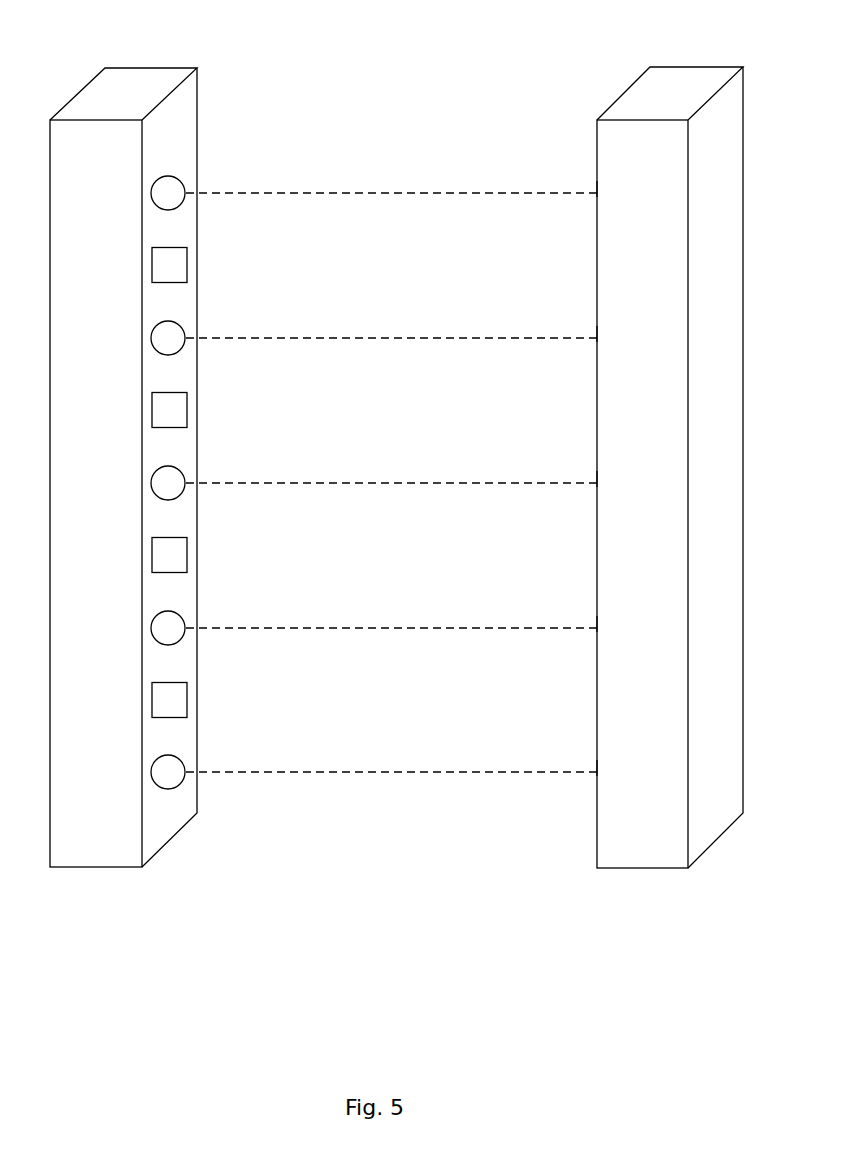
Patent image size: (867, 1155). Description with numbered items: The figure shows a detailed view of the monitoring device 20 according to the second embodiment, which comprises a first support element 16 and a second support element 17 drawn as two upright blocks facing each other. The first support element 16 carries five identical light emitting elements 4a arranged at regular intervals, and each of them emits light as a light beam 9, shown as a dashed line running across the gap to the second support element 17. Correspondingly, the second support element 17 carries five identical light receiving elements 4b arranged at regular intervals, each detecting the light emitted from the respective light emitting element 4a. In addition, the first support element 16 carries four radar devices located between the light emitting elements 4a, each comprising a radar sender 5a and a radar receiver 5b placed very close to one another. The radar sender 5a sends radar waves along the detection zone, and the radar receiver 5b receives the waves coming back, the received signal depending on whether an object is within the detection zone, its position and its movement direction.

The first support element 16 is at (77, 54).
The second support element 17 is at (750, 57).
The light emitting element 4a is at (163, 198).
The light receiving element 4b is at (585, 179).
The radar sender 5a is at (212, 471).
The radar receiver 5b is at (177, 275).
The light beam 9 is at (250, 193).
The monitoring device 20 is at (586, 963).